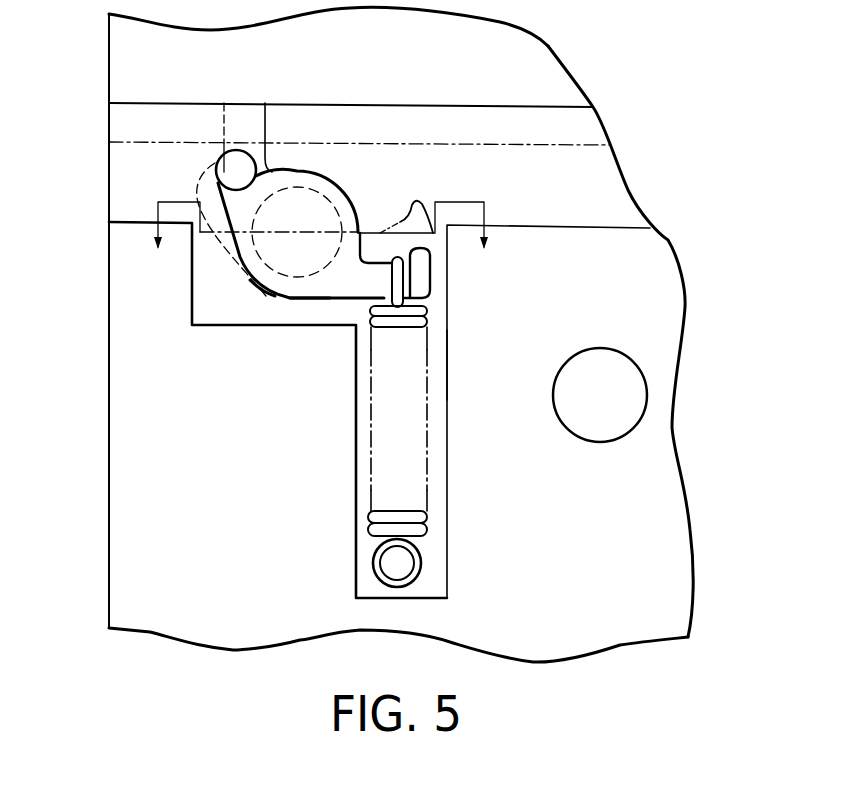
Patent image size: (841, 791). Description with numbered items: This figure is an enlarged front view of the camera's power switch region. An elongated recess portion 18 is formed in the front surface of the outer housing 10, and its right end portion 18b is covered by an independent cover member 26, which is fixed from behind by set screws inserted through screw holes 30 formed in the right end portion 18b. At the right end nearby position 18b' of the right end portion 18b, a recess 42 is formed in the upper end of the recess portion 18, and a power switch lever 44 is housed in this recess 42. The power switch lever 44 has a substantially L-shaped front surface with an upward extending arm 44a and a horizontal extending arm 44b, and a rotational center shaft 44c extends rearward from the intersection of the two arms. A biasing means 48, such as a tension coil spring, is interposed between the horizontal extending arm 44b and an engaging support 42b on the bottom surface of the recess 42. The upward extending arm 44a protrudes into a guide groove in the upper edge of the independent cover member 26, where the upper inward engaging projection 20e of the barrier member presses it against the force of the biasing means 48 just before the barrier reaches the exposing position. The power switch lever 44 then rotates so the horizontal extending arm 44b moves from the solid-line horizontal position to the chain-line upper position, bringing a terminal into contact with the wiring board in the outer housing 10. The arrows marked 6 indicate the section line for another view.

The outer housing 10 is at (560, 77).
The independent cover member 26 is at (590, 141).
The inward engaging projection 20e is at (268, 137).
The right end nearby position 18b' is at (76, 321).
The right end portion 18b is at (641, 341).
The recess portion 18 is at (654, 534).
The screw hole 30 is at (602, 349).
The section line VI-VI 6 is at (320, 245).
The power switch lever 44 is at (250, 278).
The upward extending arm 44a is at (236, 163).
The horizontal extending arm 44b is at (318, 293).
The rotational center shaft 44c is at (268, 289).
The recess 42 is at (441, 366).
The biasing means 48 is at (428, 440).
The engaging support 42b is at (403, 565).